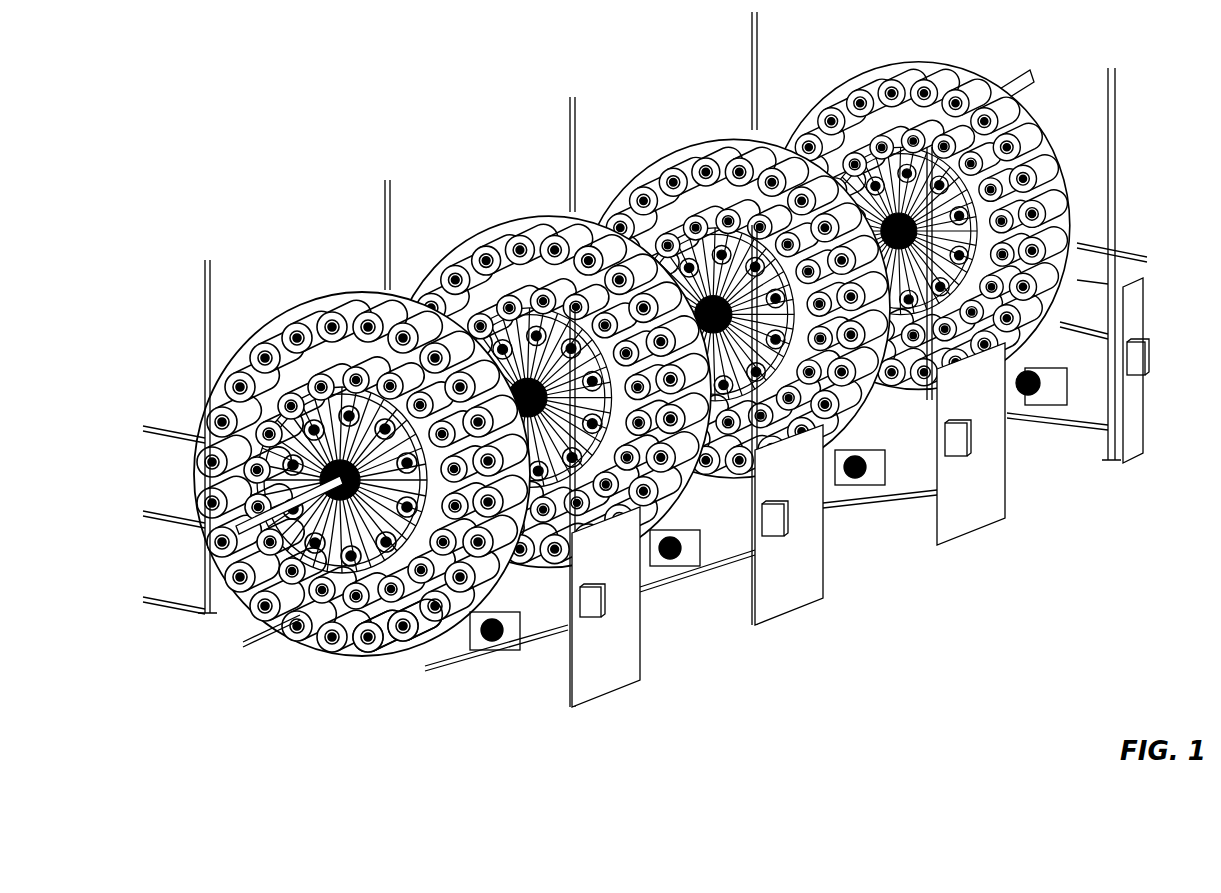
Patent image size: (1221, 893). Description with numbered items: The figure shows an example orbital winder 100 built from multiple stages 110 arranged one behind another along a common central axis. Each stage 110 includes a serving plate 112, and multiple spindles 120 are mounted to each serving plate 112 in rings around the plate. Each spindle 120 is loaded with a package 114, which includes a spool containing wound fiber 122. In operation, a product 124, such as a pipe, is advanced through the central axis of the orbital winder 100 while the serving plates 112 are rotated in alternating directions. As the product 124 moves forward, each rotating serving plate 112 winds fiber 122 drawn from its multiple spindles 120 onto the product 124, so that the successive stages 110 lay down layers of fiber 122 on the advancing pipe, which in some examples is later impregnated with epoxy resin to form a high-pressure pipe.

The orbital winder 100 is at (633, 387).
The stage 110 is at (980, 508).
The serving plate 112 is at (514, 549).
The package 114 is at (420, 656).
The spindle 120 is at (399, 645).
The fiber 122 is at (347, 650).
The product 124 is at (233, 532).